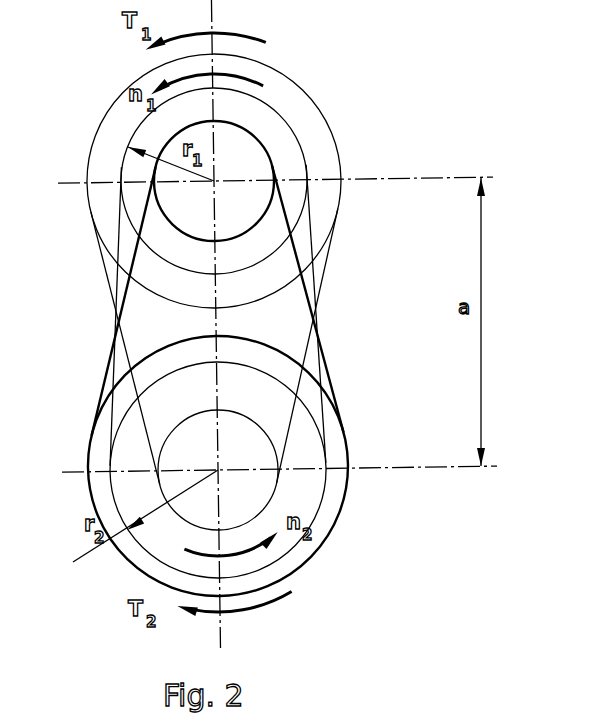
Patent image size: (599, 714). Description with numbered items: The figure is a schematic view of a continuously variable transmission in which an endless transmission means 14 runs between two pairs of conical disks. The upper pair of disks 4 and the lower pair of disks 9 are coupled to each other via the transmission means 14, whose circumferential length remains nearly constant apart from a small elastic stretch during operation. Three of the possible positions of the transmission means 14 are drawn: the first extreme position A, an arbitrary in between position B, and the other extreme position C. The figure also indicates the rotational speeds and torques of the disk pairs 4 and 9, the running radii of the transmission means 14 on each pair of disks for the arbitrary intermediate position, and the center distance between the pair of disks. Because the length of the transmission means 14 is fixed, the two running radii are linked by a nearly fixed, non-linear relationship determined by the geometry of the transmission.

The pair of disks 4 is at (292, 81).
The pair of disks 9 is at (322, 550).
The transmission means 14 is at (327, 378).
The first extreme position A is at (112, 373).
The arbitrary in between position B is at (322, 424).
The other extreme position C is at (323, 269).